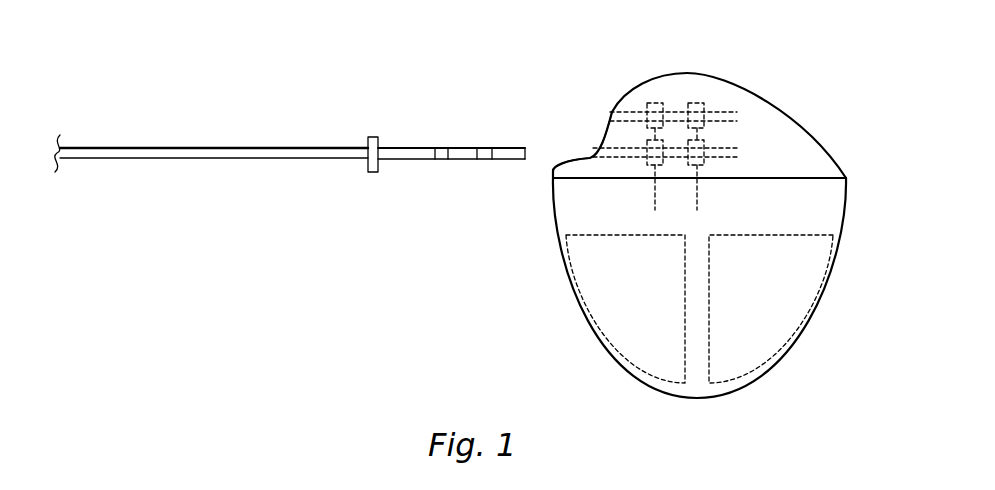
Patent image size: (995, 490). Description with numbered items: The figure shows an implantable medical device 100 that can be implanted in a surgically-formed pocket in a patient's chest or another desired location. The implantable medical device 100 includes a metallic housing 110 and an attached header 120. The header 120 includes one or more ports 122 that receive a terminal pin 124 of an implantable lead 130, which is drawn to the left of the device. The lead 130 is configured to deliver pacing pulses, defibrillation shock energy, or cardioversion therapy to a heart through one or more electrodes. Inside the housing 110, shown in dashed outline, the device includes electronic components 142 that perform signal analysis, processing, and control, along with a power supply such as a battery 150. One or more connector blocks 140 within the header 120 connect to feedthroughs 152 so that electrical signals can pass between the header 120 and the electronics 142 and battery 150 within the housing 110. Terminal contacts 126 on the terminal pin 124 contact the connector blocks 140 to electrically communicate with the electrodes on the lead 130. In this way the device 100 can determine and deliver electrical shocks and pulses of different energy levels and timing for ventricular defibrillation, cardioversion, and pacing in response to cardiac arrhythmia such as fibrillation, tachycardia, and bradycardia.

The implantable medical device 100 is at (792, 48).
The metallic housing 110 is at (697, 399).
The header 120 is at (795, 117).
The port 122 is at (608, 117).
The terminal pin 124 is at (462, 147).
The terminal contacts 126 is at (484, 160).
The implantable lead 130 is at (246, 147).
The connector blocks 140 is at (695, 103).
The electronic components 142 is at (782, 348).
The battery 150 is at (602, 332).
The feedthroughs 152 is at (700, 201).